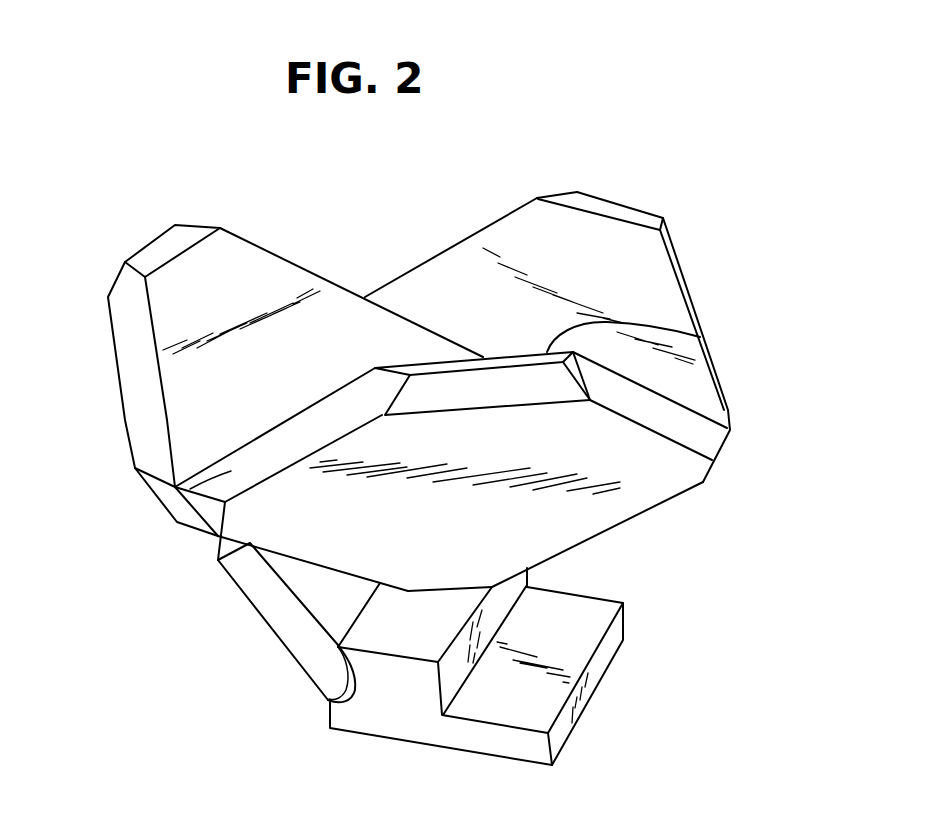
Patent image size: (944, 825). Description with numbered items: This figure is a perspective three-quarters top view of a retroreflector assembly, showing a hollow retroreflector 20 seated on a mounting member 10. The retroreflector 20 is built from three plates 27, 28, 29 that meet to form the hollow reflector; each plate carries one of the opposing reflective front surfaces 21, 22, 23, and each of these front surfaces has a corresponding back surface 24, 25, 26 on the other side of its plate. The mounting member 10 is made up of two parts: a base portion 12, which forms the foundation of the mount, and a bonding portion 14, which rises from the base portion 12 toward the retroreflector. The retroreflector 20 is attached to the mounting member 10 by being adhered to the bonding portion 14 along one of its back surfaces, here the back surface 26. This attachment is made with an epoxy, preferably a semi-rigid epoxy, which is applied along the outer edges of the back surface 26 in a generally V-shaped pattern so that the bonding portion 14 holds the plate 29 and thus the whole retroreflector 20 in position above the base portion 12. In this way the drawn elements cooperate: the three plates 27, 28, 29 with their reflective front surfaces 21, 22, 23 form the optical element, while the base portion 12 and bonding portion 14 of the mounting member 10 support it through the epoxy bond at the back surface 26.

The mounting member 10 is at (429, 637).
The base portion 12 is at (606, 661).
The bonding portion 14 is at (270, 606).
The hollow retroreflector 20 is at (431, 310).
The reflective front surface 21 is at (590, 252).
The reflective front surface 22 is at (700, 337).
The reflective front surface 23 is at (217, 291).
The back surface 24 is at (696, 293).
The back surface 25 is at (582, 470).
The back surface 26 is at (110, 345).
The plate 27 is at (640, 215).
The plate 28 is at (163, 243).
The plate 29 is at (177, 490).